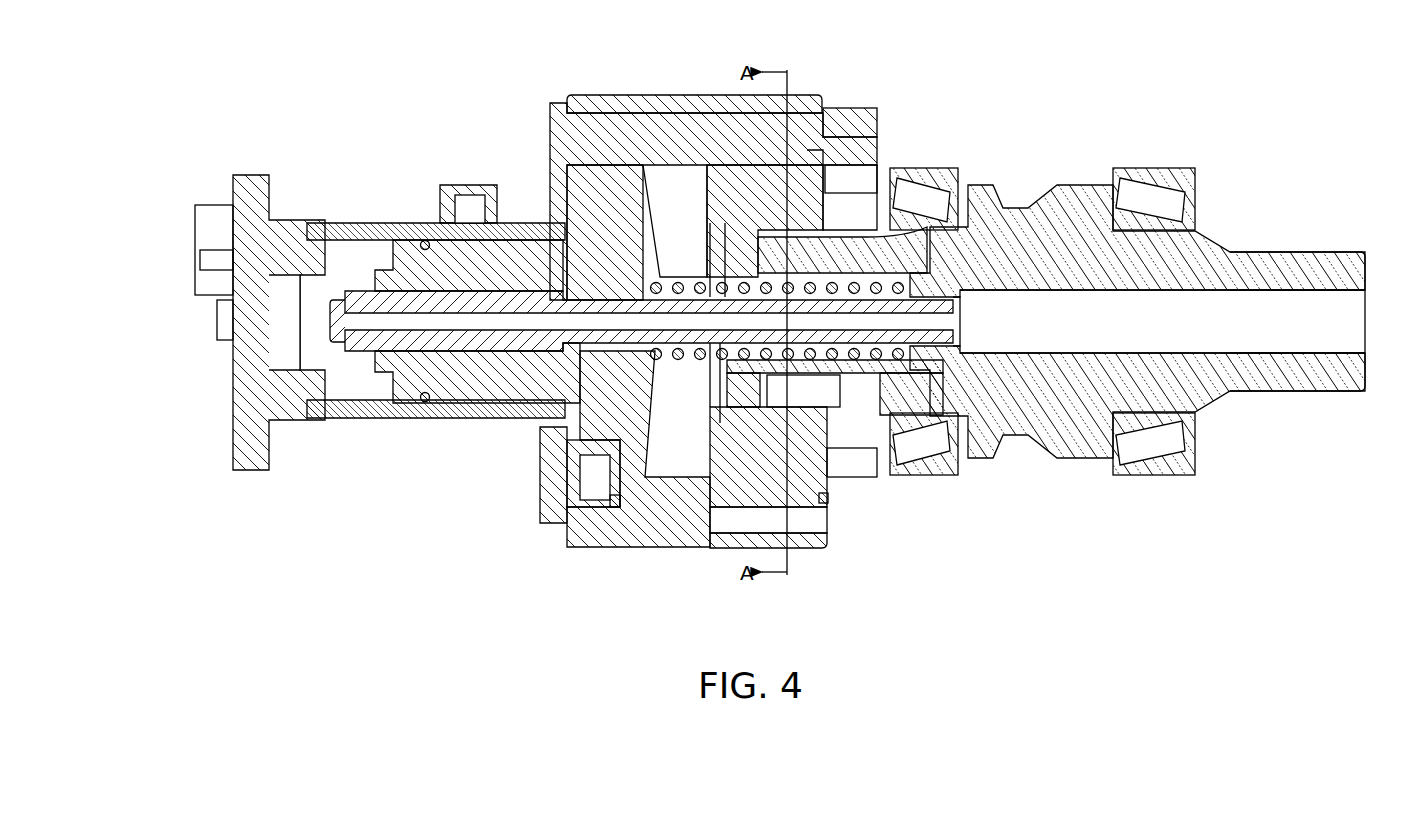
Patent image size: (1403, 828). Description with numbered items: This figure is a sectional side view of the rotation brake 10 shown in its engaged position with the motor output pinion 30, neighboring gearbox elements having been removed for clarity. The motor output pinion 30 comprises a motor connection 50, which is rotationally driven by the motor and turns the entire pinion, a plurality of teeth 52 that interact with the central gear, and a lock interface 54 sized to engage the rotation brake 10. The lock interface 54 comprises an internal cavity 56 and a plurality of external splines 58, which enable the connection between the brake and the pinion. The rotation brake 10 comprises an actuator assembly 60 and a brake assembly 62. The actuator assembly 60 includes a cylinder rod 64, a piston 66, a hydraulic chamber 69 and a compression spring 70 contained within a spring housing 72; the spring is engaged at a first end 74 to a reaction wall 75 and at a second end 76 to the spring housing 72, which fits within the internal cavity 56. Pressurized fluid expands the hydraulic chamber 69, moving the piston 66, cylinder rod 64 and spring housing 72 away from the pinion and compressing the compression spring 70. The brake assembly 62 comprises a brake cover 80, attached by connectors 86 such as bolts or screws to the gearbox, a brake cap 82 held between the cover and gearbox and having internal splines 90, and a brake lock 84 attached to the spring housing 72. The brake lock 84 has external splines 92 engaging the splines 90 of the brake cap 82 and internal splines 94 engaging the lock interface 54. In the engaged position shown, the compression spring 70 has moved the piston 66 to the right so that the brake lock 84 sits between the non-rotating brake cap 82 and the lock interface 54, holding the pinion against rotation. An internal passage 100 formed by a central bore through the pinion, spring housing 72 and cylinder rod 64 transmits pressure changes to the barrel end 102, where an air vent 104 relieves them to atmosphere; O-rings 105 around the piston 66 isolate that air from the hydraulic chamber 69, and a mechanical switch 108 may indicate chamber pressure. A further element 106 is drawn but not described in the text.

The rotation brake 10 is at (325, 123).
The motor output pinion 30 is at (1075, 185).
The motor connection 50 is at (1318, 256).
The teeth 52 is at (1053, 460).
The lock interface 54 is at (847, 227).
The internal cavity 56 is at (952, 465).
The external splines 58 is at (843, 233).
The actuator assembly 60 is at (420, 482).
The brake assembly 62 is at (605, 619).
The cylinder rod 64 is at (560, 280).
The piston 66 is at (402, 387).
The hydraulic chamber 69 is at (333, 247).
The compression spring 70 is at (677, 273).
The spring housing 72 is at (730, 460).
The first end 74 is at (595, 230).
The reaction wall 75 is at (615, 500).
The second end 76 is at (905, 290).
The brake cover 80 is at (650, 92).
The brake cap 82 is at (813, 547).
The brake lock 84 is at (728, 480).
The connectors 86 is at (875, 113).
The splines 90 is at (797, 160).
The splines 92 is at (823, 503).
The splines 94 is at (847, 453).
The internal passage 100 is at (1202, 342).
The barrel end 102 is at (232, 182).
The air vent 104 is at (199, 207).
The O-rings 105 is at (422, 243).
The plug 106 is at (543, 510).
The mechanical switch 108 is at (458, 195).